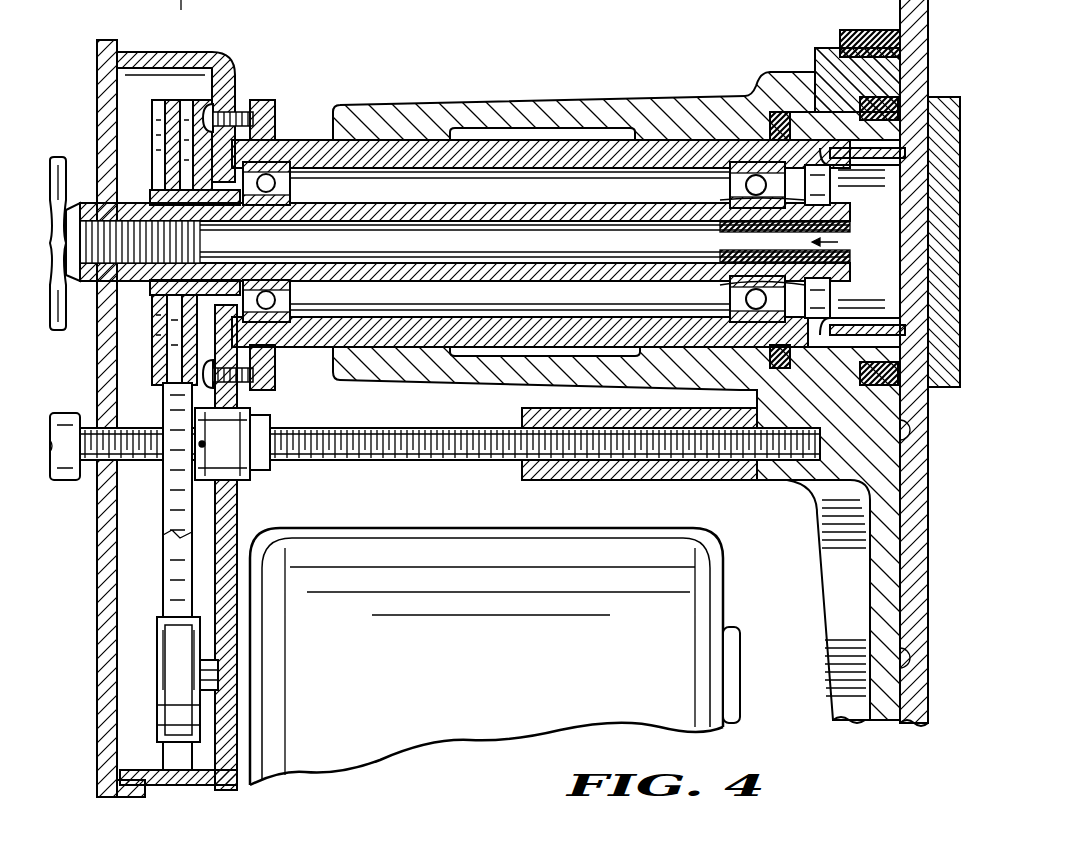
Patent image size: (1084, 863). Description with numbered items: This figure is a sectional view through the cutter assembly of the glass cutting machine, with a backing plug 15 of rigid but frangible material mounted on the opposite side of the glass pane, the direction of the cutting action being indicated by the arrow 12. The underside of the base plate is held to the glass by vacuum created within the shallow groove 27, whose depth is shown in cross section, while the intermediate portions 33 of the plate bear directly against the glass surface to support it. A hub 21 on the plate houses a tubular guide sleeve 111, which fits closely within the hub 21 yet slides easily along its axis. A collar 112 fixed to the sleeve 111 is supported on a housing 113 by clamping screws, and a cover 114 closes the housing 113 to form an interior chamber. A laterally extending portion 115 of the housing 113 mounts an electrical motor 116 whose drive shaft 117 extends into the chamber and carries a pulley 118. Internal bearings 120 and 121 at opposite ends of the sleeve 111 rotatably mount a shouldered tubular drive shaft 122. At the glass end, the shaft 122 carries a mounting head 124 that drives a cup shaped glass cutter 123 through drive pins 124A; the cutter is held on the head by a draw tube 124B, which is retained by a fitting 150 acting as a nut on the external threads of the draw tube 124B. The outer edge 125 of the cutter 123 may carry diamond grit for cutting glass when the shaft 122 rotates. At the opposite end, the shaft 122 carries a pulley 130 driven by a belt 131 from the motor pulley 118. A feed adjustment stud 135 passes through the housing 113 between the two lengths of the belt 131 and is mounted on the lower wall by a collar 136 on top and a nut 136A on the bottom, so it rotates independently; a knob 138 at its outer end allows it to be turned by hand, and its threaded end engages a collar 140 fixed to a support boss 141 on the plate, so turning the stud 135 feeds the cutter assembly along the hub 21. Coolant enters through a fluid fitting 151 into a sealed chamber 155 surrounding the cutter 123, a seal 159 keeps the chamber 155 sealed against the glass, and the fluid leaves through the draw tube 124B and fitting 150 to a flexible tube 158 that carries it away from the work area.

The workpiece rotation axis direction arrow 12 is at (905, 228).
The backing plug 15 is at (940, 387).
The hub 21 is at (535, 97).
The shallow groove 27 is at (905, 555).
The intermediate plate portion 33 is at (900, 520).
The tubular guide sleeve 111 is at (340, 106).
The collar 112 is at (310, 137).
The housing 113 is at (235, 68).
The cover 114 is at (140, 38).
The laterally extending portion 115 is at (232, 530).
The electrical motor 116 is at (410, 565).
The drive shaft 117 is at (210, 678).
The pulley 118 is at (200, 641).
The internal bearing 120 is at (290, 183).
The internal bearing 121 is at (728, 188).
The tubular drive shaft 122 is at (495, 210).
The glass cutter 123 is at (885, 322).
The mounting head 124 is at (848, 192).
The drive pin 124A is at (720, 288).
The draw tube 124B is at (437, 237).
The outer edge 125 is at (950, 100).
The pulley 130 is at (190, 95).
The belt 131 is at (168, 505).
The feed adjustment stud 135 is at (390, 445).
The collar 136 is at (235, 488).
The nut 136A is at (272, 425).
The knob 138 is at (72, 480).
The collar 140 is at (605, 480).
The support boss 141 is at (782, 480).
The fitting 150 is at (85, 205).
The fluid fitting 151 is at (185, 232).
The sealed chamber 155 is at (800, 110).
The flexible tube 158 is at (870, 130).
The seal 159 is at (890, 145).